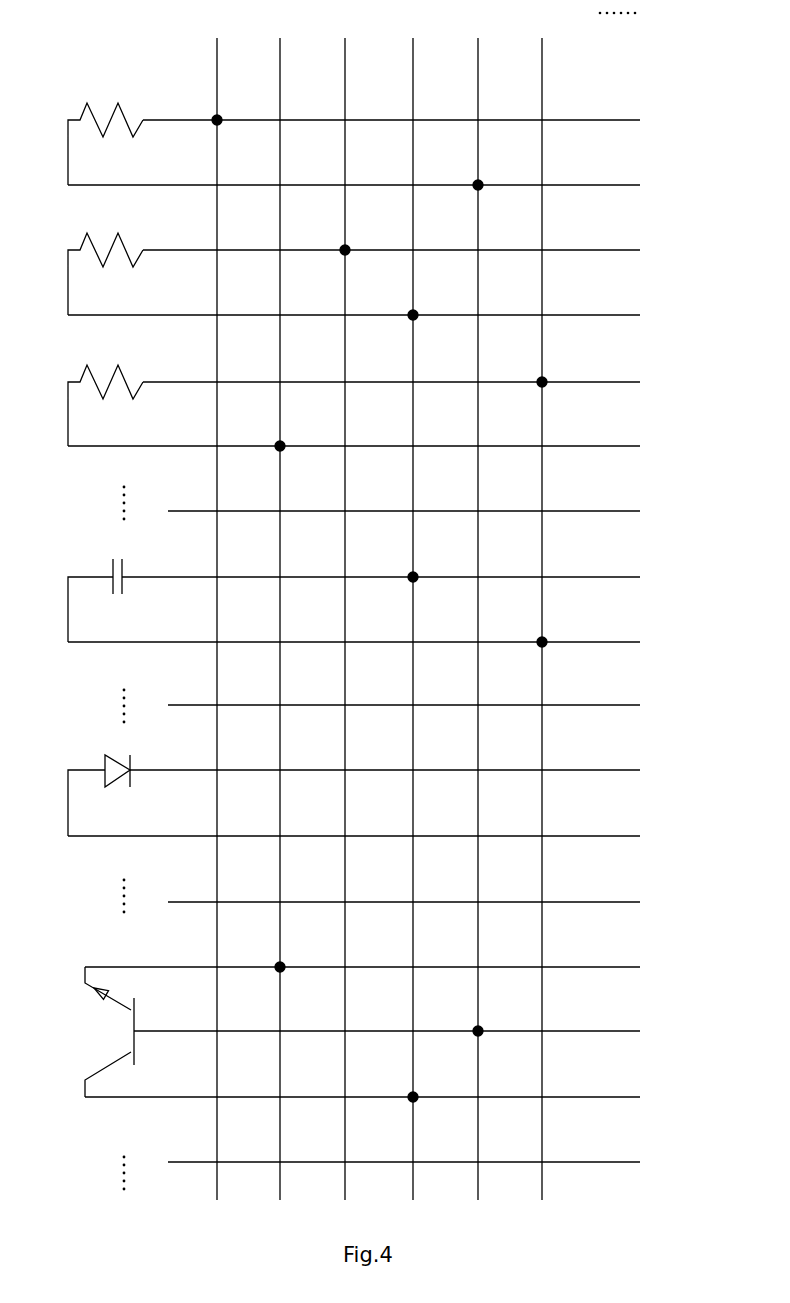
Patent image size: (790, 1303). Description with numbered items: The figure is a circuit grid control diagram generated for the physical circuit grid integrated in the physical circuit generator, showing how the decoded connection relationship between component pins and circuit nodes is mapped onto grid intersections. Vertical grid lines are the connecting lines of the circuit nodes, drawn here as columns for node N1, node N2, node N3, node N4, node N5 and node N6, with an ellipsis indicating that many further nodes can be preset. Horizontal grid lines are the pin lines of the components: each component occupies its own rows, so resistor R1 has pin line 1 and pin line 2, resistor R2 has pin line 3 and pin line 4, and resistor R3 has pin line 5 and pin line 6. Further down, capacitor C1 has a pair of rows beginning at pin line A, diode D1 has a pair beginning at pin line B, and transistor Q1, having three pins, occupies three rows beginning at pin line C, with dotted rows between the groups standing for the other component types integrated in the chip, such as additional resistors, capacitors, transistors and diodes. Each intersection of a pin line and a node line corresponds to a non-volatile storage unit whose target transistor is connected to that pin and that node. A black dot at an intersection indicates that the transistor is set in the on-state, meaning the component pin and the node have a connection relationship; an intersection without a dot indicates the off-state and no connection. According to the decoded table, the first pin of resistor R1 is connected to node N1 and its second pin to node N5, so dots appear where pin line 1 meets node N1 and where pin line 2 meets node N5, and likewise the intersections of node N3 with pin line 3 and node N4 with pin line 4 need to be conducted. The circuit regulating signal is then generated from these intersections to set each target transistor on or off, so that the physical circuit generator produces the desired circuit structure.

The node N1 is at (218, 603).
The node N2 is at (281, 603).
The node N3 is at (346, 603).
The node N4 is at (414, 603).
The node N5 is at (479, 603).
The node N6 is at (543, 603).
The pin line 1 is at (403, 121).
The pin line 2 is at (365, 186).
The pin line 3 is at (403, 251).
The pin line 4 is at (365, 316).
The pin line 5 is at (403, 383).
The pin line 6 is at (365, 447).
The pin line A is at (393, 578).
The pin line B is at (397, 771).
The pin line C is at (374, 968).
The resistor R1 is at (103, 133).
The resistor R2 is at (103, 263).
The resistor R3 is at (103, 394).
The capacitor C1 is at (104, 597).
The diode D1 is at (108, 791).
The transistor Q1 is at (112, 1019).